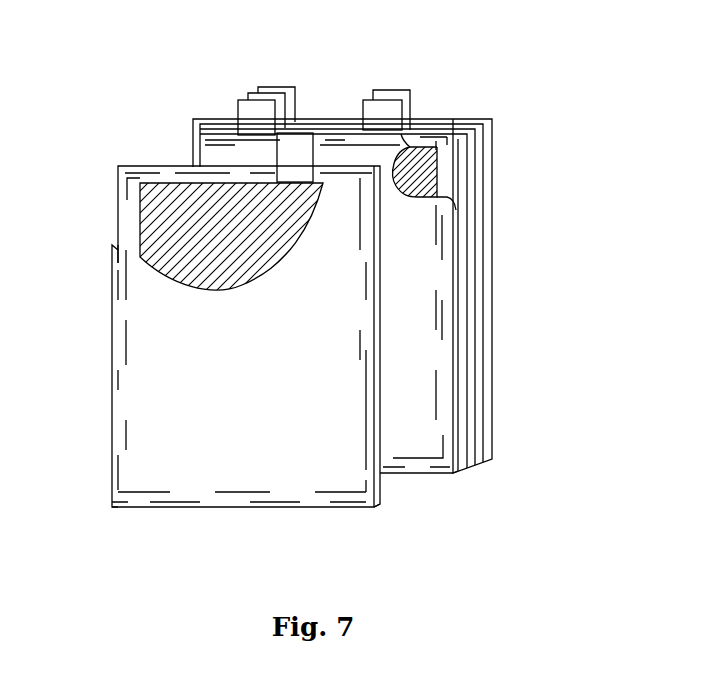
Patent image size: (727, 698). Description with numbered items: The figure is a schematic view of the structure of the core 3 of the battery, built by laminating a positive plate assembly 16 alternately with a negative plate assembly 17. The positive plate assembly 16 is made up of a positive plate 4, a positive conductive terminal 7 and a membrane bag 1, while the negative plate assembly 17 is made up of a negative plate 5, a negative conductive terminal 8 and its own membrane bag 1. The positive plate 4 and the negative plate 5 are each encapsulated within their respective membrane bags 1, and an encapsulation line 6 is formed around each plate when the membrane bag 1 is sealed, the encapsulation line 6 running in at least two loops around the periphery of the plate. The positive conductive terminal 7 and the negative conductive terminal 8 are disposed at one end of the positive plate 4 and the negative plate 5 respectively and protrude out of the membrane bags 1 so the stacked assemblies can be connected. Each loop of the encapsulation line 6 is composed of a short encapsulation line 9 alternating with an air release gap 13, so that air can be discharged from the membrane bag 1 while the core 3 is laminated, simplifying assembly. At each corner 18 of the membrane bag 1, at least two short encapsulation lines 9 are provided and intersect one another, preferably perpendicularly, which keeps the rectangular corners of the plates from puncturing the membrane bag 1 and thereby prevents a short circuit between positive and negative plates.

The membrane bag 1 is at (101, 306).
The core 3 is at (450, 98).
The positive plate 4 is at (172, 220).
The negative plate 5 is at (420, 172).
The encapsulation line 6 is at (112, 277).
The positive conductive terminal 7 is at (297, 140).
The negative conductive terminal 8 is at (245, 112).
The short encapsulation line 9 is at (120, 393).
The air release gap 13 is at (120, 441).
The positive plate assembly 16 is at (382, 510).
The negative plate assembly 17 is at (453, 473).
The corner 18 is at (107, 508).